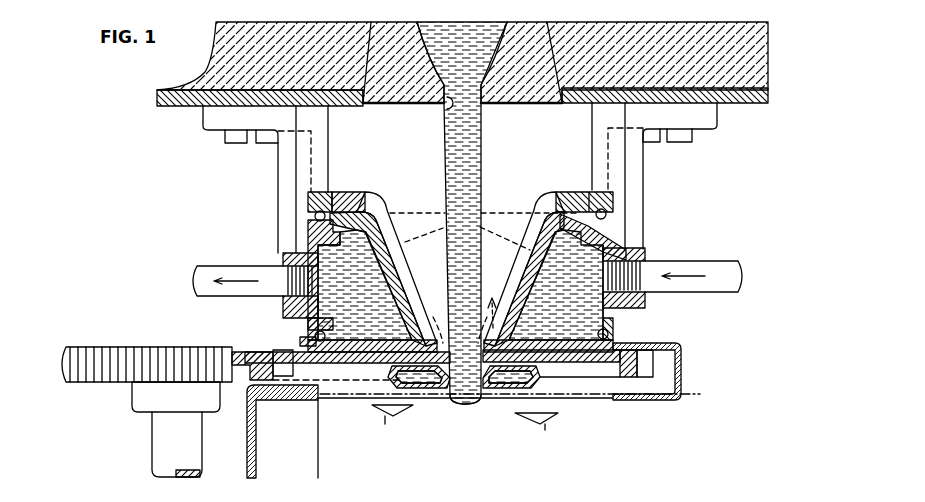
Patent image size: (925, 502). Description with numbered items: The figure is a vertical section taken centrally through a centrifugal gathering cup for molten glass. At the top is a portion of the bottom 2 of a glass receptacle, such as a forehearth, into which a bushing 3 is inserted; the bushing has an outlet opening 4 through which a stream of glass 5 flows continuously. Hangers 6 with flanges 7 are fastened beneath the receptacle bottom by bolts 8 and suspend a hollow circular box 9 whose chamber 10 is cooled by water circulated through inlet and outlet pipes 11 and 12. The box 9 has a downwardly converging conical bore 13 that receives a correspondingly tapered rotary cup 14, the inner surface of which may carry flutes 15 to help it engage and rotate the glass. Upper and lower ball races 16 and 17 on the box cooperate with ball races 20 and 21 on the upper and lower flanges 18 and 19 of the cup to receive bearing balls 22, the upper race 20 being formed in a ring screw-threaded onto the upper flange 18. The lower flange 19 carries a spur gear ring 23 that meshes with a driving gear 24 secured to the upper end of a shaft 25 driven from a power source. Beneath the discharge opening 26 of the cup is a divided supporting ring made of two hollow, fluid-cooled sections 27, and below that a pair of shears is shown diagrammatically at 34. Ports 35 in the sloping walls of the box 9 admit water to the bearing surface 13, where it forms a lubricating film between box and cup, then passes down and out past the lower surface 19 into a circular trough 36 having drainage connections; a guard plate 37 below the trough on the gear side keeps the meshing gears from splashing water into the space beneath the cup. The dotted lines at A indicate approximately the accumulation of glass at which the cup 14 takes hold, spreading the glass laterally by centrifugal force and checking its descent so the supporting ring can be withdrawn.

The receptacle bottom 2 is at (745, 43).
The bushing 3 is at (530, 100).
The outlet opening 4 is at (440, 108).
The stream of glass 5 is at (482, 145).
The hangers 6 is at (318, 132).
The flanges 7 is at (213, 118).
The bolts 8 is at (262, 141).
The hollow circular box 9 is at (623, 233).
The chamber 10 is at (640, 256).
The inlet pipe 11 is at (728, 274).
The outlet pipe 12 is at (213, 266).
The conical bore 13 is at (548, 250).
The rotary cup 14 is at (377, 212).
The flutes 15 is at (547, 202).
The upper ball race 16 is at (308, 227).
The lower ball race 17 is at (307, 323).
The upper flange 18 is at (347, 191).
The lower flange 19 is at (353, 364).
The upper ball race 20 is at (308, 199).
The lower ball race 21 is at (298, 341).
The bearing balls 22 is at (314, 214).
The spur gear ring 23 is at (648, 360).
The driving gear 24 is at (87, 374).
The shaft 25 is at (160, 443).
The discharge opening 26 is at (483, 392).
The supporting ring sections 27 is at (423, 390).
The shears 34 is at (462, 429).
The ports 35 is at (550, 223).
The circular trough 36 is at (682, 385).
The guard plate 37 is at (250, 438).
The accumulation of glass A is at (492, 303).